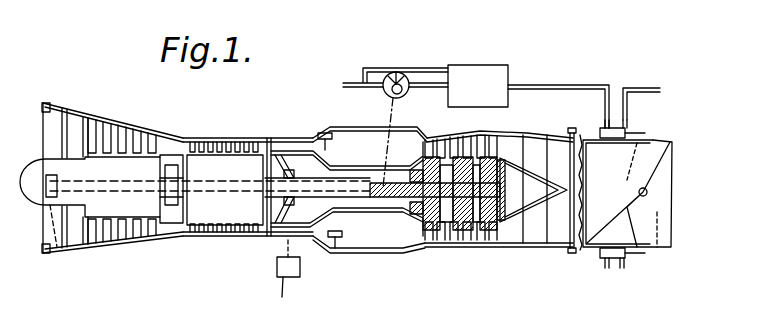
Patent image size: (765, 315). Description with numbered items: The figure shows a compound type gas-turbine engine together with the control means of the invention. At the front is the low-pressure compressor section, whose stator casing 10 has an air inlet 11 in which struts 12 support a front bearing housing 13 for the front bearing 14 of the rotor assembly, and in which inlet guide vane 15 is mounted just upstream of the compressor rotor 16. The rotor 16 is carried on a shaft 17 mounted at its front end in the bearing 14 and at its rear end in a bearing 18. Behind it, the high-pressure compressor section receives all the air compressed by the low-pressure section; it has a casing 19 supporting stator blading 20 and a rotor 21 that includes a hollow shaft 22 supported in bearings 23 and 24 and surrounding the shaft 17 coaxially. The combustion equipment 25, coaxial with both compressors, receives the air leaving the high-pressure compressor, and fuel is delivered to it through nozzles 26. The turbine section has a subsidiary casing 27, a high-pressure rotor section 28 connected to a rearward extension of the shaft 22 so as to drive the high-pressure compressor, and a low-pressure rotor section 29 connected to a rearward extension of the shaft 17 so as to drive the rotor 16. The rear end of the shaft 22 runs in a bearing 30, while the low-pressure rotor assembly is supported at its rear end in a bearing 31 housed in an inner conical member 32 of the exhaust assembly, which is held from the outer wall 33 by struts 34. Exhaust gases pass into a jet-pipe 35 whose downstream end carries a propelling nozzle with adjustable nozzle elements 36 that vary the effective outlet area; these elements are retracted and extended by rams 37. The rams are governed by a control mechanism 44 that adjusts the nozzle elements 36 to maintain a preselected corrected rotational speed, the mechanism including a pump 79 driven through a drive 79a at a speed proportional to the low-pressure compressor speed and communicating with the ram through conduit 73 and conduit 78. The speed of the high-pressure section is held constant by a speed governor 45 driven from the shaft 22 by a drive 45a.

The stator casing 10 is at (128, 128).
The air inlet 11 is at (47, 133).
The struts 12 is at (53, 117).
The front bearing housing 13 is at (38, 197).
The front bearing 14 is at (57, 245).
The inlet guide vane 15 is at (72, 127).
The compressor rotor 16 is at (118, 205).
The shaft 17 is at (147, 200).
The bearing 18 is at (143, 210).
The casing 19 is at (237, 137).
The stator blading 20 is at (212, 137).
The rotor 21 is at (208, 212).
The shaft 22 is at (360, 215).
The bearing 23 is at (183, 173).
The bearing 24 is at (292, 138).
The combustion equipment 25 is at (366, 120).
The nozzles 26 is at (337, 240).
The subsidiary casing 27 is at (473, 128).
The high-pressure rotor section 28 is at (440, 245).
The low-pressure rotor section 29 is at (470, 243).
The bearing 30 is at (418, 207).
The bearing 31 is at (500, 192).
The inner conical member 32 is at (508, 215).
The outer wall 33 is at (527, 140).
The struts 34 is at (545, 143).
The jet-pipe 35 is at (582, 248).
The adjustable nozzle elements 36 is at (653, 119).
The rams 37 is at (610, 247).
The control mechanism 44 is at (483, 65).
The speed governor 45 is at (277, 270).
The drive 45a is at (284, 248).
The conduit 73 is at (636, 87).
The conduit 78 is at (543, 84).
The pump 79 is at (393, 72).
The drive 79a is at (415, 140).